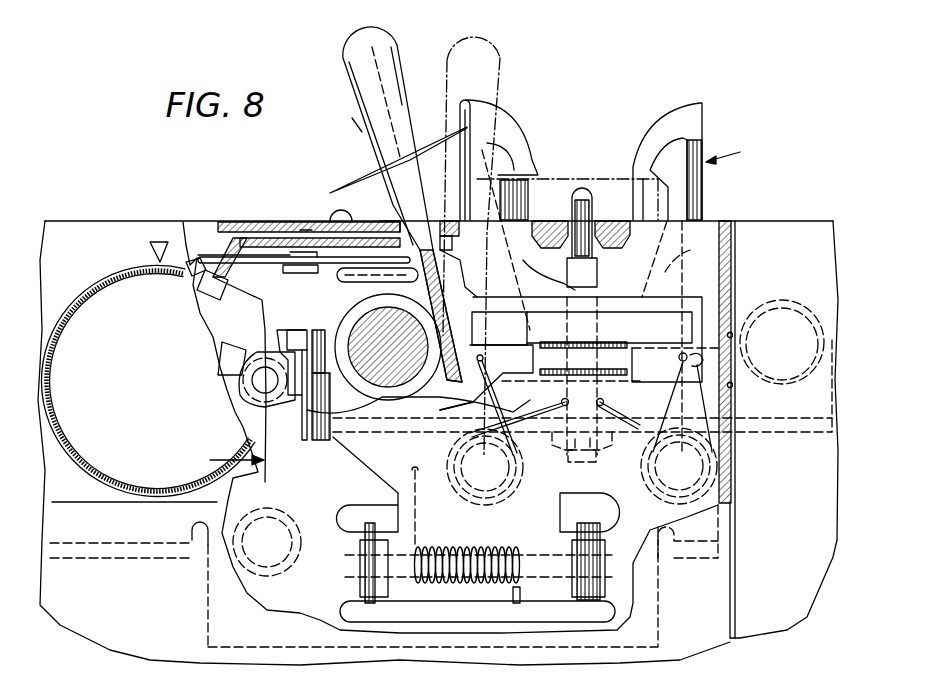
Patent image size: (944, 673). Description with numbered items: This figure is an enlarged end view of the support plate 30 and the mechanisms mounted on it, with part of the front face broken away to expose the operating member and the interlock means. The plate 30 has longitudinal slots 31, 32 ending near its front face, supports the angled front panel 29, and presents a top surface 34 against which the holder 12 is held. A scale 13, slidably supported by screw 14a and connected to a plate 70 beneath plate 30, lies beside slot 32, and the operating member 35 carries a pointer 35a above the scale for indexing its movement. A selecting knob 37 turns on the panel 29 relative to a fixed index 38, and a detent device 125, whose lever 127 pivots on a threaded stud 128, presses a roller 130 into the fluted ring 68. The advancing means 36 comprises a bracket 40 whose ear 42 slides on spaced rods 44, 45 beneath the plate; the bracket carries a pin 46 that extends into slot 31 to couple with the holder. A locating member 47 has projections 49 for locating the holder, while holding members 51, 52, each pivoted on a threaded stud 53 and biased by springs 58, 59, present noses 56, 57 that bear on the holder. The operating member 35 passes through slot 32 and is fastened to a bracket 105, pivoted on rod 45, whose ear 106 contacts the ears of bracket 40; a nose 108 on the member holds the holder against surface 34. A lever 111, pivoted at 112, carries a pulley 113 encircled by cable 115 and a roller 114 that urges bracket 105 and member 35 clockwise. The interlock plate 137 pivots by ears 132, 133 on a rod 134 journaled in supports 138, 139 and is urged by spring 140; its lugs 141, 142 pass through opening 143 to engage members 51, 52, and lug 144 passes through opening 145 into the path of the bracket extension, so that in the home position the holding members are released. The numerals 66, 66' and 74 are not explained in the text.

The holder 12 is at (553, 190).
The scale 13 is at (282, 226).
The screw 14a is at (322, 252).
The panel 29 is at (88, 221).
The plate 30 is at (297, 222).
The longitudinal slot 31 is at (592, 200).
The longitudinal slot 32 is at (390, 220).
The top surface 34 is at (540, 218).
The operating member 35 is at (372, 28).
The pointer 35a is at (372, 123).
The advancing means 36 is at (790, 440).
The selecting knob 37 is at (98, 280).
The fixed index 38 is at (156, 238).
The bracket 40 is at (745, 449).
The ear 42 is at (760, 298).
The rod 44 is at (790, 328).
The rod 45 is at (335, 322).
The pin 46 is at (633, 190).
The locating member 47 is at (734, 151).
The projections 49 is at (508, 128).
The holding member 51 is at (680, 265).
The holding member 52 is at (515, 268).
The threaded stud 53 is at (510, 465).
The nose 56 is at (660, 165).
The nose 57 is at (513, 160).
The spring 58 is at (688, 366).
The spring 59 is at (502, 397).
The pivot block 66 is at (186, 297).
The pivot block end 66' is at (175, 282).
The fluted ring 68 is at (233, 355).
The plate 70 is at (308, 221).
The body wall 74 is at (200, 255).
The bracket 105 is at (440, 415).
The ear 106 is at (362, 426).
The nose 108 is at (418, 122).
The lever 111 is at (258, 257).
The pivot 112 is at (238, 263).
The pulley 113 is at (345, 275).
The roller 114 is at (343, 190).
The cable 115 is at (350, 322).
The detent device 125 is at (217, 460).
The lever 127 is at (252, 445).
The threaded stud 128 is at (280, 546).
The roller 130 is at (240, 372).
The ear 132 is at (650, 590).
The ear 133 is at (365, 590).
The rod 134 is at (548, 560).
The plate 137 is at (385, 483).
The support 138 is at (602, 545).
The support 139 is at (360, 540).
The spring 140 is at (495, 550).
The lug 141 is at (692, 320).
The lug 142 is at (484, 327).
The opening 143 is at (733, 376).
The lug 144 is at (320, 442).
The opening 145 is at (265, 420).